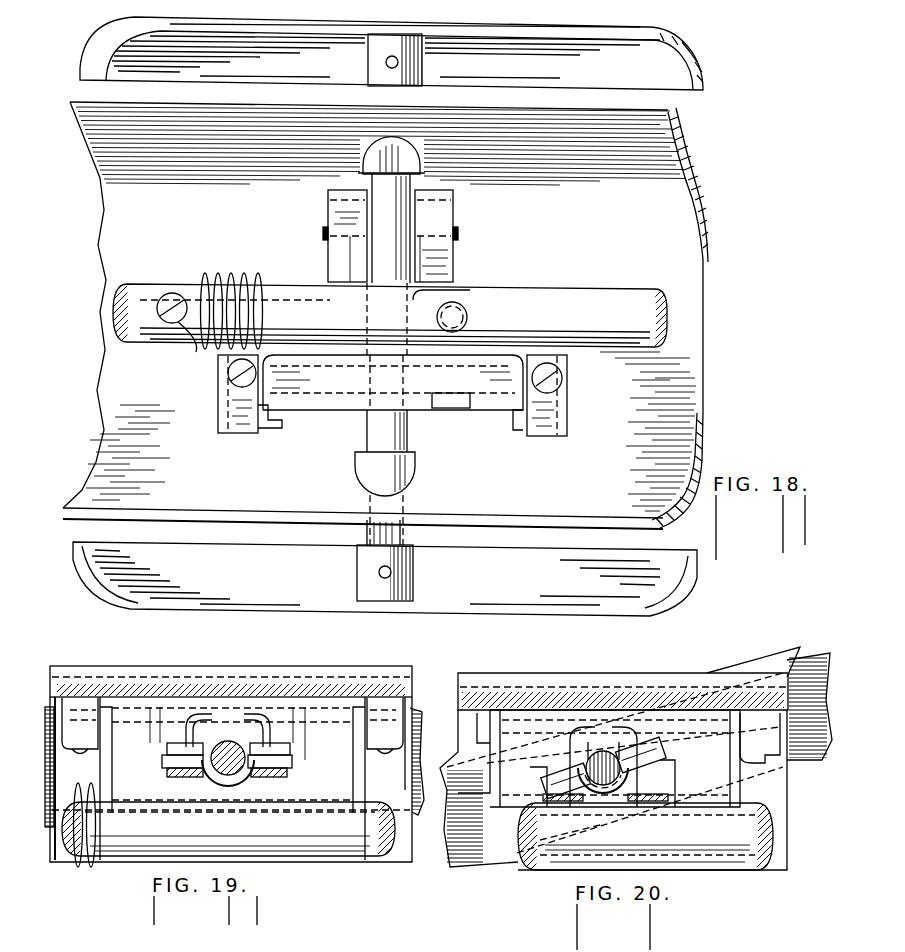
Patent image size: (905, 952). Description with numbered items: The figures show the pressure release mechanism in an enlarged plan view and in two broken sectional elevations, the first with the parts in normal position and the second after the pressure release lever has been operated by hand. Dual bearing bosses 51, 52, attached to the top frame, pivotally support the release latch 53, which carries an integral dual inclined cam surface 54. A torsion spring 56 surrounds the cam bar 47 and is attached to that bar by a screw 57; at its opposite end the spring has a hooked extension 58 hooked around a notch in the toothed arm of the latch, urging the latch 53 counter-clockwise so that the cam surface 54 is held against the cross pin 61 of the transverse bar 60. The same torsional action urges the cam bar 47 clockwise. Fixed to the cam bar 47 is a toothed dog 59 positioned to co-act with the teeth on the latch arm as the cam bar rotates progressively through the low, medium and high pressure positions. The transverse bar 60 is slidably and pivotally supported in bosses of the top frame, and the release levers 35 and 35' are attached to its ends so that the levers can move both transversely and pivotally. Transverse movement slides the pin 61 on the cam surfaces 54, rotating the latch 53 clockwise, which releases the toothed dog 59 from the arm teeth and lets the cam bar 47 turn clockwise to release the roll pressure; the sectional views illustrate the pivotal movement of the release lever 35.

In FIG. 18, the pressure release lever 35 is at (422, 53).
In FIG. 18, the pressure release lever 35' is at (390, 593).
In FIG. 20, the pressure release lever 35' is at (764, 646).
In FIG. 18, the cam bar 47 is at (573, 295).
In FIG. 19, the cam bar 47 is at (373, 848).
In FIG. 20, the cam bar 47 is at (757, 850).
In FIG. 18, the bearing boss 51 is at (243, 434).
In FIG. 18, the bearing boss 52 is at (553, 437).
In FIG. 18, the release latch 53 is at (491, 411).
In FIG. 19, the dual inclined cam surface 54 is at (178, 750).
In FIG. 20, the dual inclined cam surface 54 is at (548, 782).
In FIG. 18, the torsion spring 56 is at (234, 274).
In FIG. 19, the torsion spring 56 is at (82, 866).
In FIG. 18, the screw 57 is at (174, 292).
In FIG. 18, the hooked extension 58 is at (280, 414).
In FIG. 18, the toothed dog 59 is at (462, 300).
In FIG. 18, the transverse bar 60 is at (393, 188).
In FIG. 19, the transverse bar 60 is at (228, 741).
In FIG. 20, the transverse bar 60 is at (604, 751).
In FIG. 18, the cross pin 61 is at (458, 233).
In FIG. 19, the cross pin 61 is at (166, 766).
In FIG. 20, the cross pin 61 is at (566, 802).